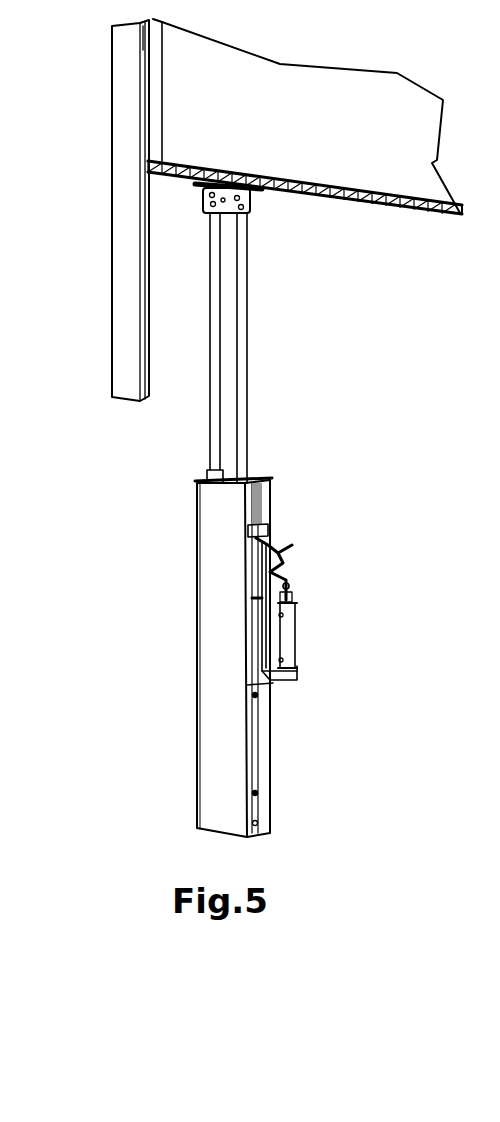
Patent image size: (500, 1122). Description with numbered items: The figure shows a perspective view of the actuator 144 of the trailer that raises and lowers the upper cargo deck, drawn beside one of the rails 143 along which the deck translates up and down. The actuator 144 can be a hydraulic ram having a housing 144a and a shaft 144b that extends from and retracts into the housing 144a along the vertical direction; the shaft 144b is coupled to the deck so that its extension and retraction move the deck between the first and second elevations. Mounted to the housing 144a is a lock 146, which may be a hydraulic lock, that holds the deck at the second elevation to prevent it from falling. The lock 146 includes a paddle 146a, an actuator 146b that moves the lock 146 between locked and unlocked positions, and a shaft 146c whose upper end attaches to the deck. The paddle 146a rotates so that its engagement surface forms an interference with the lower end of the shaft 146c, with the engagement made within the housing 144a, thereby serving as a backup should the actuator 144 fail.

The rail 143 is at (123, 282).
The actuator 144 is at (176, 510).
The housing 144a is at (222, 628).
The shaft 144b is at (217, 433).
The lock 146 is at (330, 446).
The paddle 146a is at (298, 562).
The actuator 146b is at (290, 645).
The shaft 146c is at (247, 446).